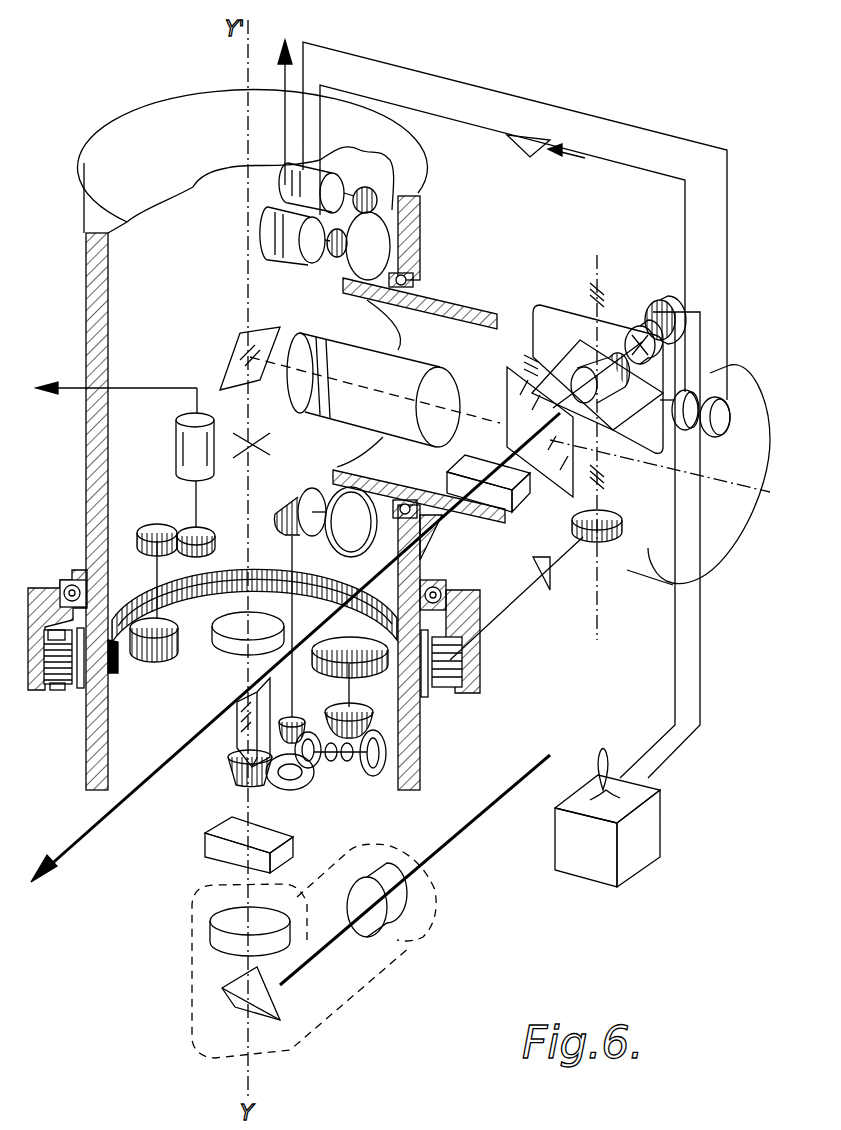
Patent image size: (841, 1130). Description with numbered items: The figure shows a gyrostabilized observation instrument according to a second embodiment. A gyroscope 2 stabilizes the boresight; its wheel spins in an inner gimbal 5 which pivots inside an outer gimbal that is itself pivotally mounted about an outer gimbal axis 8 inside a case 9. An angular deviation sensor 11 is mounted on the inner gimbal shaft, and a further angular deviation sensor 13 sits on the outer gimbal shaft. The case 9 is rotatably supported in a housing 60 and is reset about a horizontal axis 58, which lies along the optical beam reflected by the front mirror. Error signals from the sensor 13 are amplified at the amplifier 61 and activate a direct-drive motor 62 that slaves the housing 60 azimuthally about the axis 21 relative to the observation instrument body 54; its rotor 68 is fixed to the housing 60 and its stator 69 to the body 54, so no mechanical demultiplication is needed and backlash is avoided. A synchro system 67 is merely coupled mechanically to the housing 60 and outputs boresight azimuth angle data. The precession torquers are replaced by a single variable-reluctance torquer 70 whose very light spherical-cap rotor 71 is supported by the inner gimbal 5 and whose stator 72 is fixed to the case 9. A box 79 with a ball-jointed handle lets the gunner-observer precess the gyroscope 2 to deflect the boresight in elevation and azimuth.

The gyroscope 2 is at (548, 298).
The inner gimbal 5 is at (615, 425).
The outer gimbal axis 8 is at (595, 282).
The case 9 is at (475, 310).
The angular deviation sensor 11 is at (684, 428).
The angular deviation sensor 13 is at (620, 520).
The axis 21 is at (246, 292).
The observation instrument body 54 is at (43, 588).
The horizontal axis 58 is at (718, 482).
The housing 60 is at (104, 340).
The amplifier 61 is at (543, 590).
The direct-drive motor 62 is at (432, 702).
The synchro system 67 is at (176, 456).
The rotor 68 is at (90, 690).
The stator 69 is at (58, 672).
The torquer 70 is at (650, 320).
The rotor 71 is at (622, 346).
The stator 72 is at (657, 302).
The box 79 is at (600, 875).